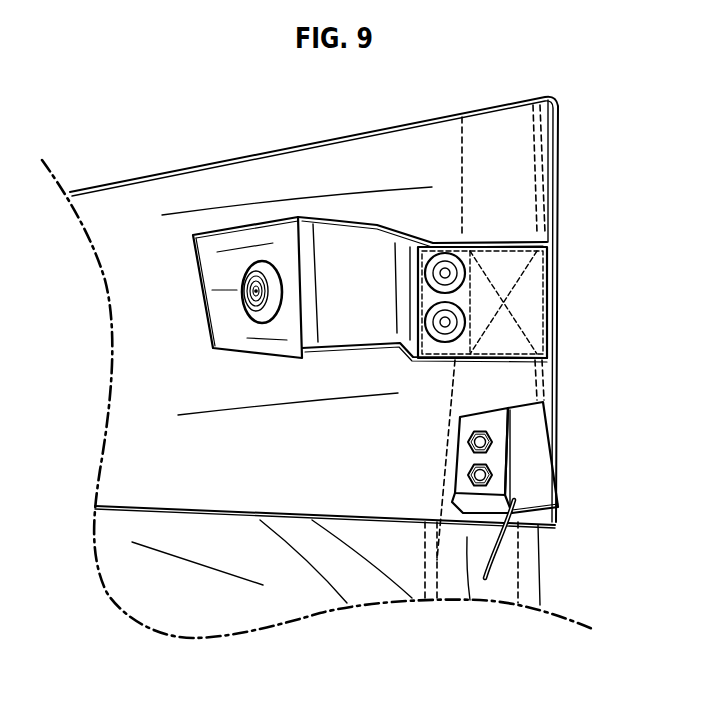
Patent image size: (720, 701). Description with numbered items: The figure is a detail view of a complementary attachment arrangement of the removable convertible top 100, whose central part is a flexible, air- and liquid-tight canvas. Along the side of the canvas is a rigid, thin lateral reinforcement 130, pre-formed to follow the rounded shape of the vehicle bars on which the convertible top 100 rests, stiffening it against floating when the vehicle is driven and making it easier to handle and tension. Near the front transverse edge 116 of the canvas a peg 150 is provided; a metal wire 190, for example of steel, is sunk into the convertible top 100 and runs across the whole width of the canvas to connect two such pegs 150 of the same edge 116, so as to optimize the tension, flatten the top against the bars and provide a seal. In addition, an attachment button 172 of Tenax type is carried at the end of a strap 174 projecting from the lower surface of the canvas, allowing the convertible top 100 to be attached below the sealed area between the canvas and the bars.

The convertible top 100 is at (302, 582).
The front transverse edge 116 is at (528, 567).
The lateral reinforcement 130 is at (507, 198).
The peg 150 is at (497, 457).
The attachment button 172 is at (250, 317).
The strap 174 is at (353, 275).
The metal wire 190 is at (497, 541).